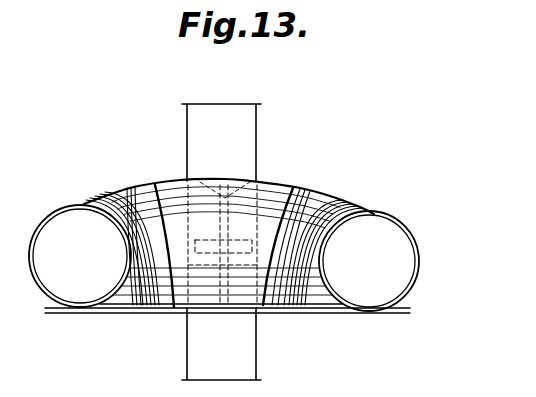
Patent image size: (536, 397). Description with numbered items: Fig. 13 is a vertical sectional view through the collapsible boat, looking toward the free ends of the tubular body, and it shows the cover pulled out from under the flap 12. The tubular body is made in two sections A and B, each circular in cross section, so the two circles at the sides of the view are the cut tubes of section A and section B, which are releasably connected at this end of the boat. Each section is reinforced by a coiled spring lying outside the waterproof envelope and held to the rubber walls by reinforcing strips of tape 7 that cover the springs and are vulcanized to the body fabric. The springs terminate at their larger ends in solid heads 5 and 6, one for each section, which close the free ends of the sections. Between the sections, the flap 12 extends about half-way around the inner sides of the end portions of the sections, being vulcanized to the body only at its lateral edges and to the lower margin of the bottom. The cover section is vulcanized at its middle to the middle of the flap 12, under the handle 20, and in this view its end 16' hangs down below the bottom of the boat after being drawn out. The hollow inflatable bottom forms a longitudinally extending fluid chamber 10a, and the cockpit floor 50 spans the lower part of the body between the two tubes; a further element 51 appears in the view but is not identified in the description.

The head 5 is at (190, 182).
The head 6 is at (252, 184).
The reinforcing strips of tape 7 is at (133, 186).
The flap 12 is at (287, 188).
The end of the cover 16' is at (242, 240).
The handle 20 is at (242, 253).
The cockpit floor 50 is at (108, 310).
The bottom layer 51 is at (148, 311).
The fluid chamber 10a is at (203, 307).
The section A is at (42, 224).
The section B is at (416, 246).